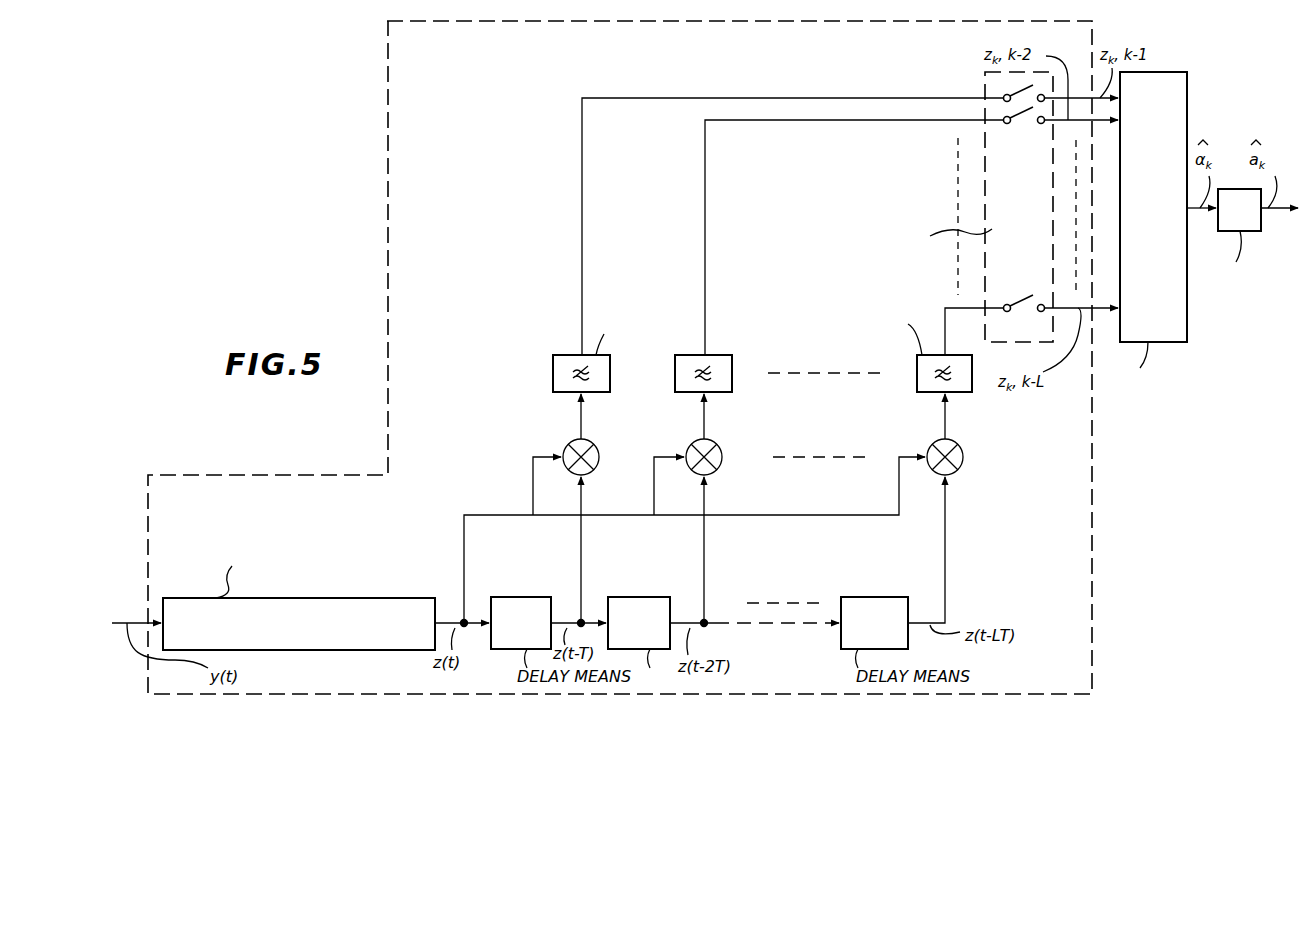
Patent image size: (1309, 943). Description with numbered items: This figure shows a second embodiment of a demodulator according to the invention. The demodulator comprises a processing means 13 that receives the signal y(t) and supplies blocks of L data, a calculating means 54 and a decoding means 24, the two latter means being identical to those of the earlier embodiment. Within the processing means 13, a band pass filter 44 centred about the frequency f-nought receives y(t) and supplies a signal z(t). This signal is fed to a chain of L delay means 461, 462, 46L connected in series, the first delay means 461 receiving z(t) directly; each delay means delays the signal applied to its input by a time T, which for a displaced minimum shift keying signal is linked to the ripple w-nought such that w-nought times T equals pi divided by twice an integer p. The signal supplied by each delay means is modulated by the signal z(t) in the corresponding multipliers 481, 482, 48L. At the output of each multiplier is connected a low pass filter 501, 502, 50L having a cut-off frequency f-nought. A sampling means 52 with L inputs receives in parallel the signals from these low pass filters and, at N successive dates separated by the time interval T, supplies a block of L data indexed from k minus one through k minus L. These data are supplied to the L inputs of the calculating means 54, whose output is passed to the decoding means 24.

The processing means 13 is at (596, 70).
The band pass filter 44 is at (305, 598).
The first delay means 461 is at (548, 597).
The second delay means 462 is at (650, 586).
The L-th delay means 46L is at (848, 597).
The first multiplier 481 is at (568, 445).
The second multiplier 482 is at (691, 445).
The L-th multiplier 48L is at (932, 445).
The first low pass filter 501 is at (553, 365).
The second low pass filter 502 is at (675, 366).
The L-th low pass filter 50L is at (917, 364).
The sampling means 52 is at (1030, 220).
The calculating means 54 is at (1164, 217).
The decoding means 24 is at (1250, 212).